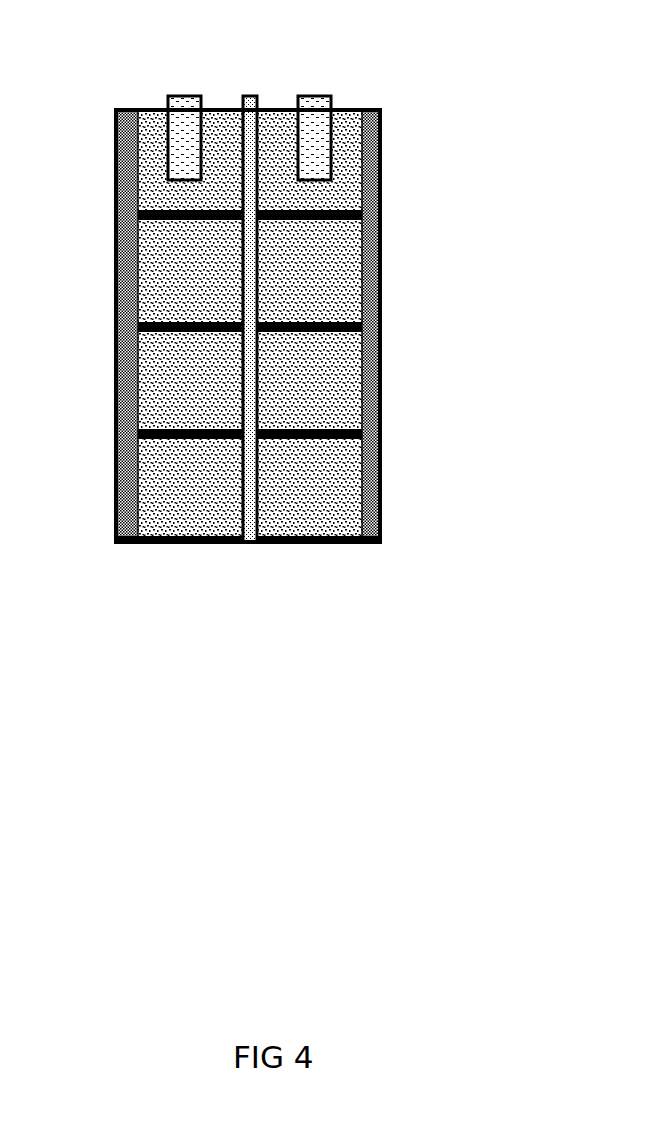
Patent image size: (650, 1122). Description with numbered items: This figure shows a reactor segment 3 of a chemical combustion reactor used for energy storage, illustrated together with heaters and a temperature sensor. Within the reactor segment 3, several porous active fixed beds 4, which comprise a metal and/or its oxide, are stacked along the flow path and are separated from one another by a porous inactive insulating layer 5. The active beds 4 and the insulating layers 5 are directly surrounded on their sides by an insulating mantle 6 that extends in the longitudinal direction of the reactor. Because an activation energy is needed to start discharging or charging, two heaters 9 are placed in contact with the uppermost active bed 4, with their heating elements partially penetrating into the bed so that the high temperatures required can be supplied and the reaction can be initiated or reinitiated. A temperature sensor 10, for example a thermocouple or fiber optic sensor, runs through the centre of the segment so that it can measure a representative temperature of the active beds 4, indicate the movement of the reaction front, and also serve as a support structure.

The reactor segment 3 is at (100, 67).
The porous active fixed bed 4 is at (335, 245).
The porous inactive insulating layer 5 is at (382, 466).
The insulating mantle 6 is at (376, 288).
The heater 9 is at (183, 120).
The temperature sensor 10 is at (261, 527).